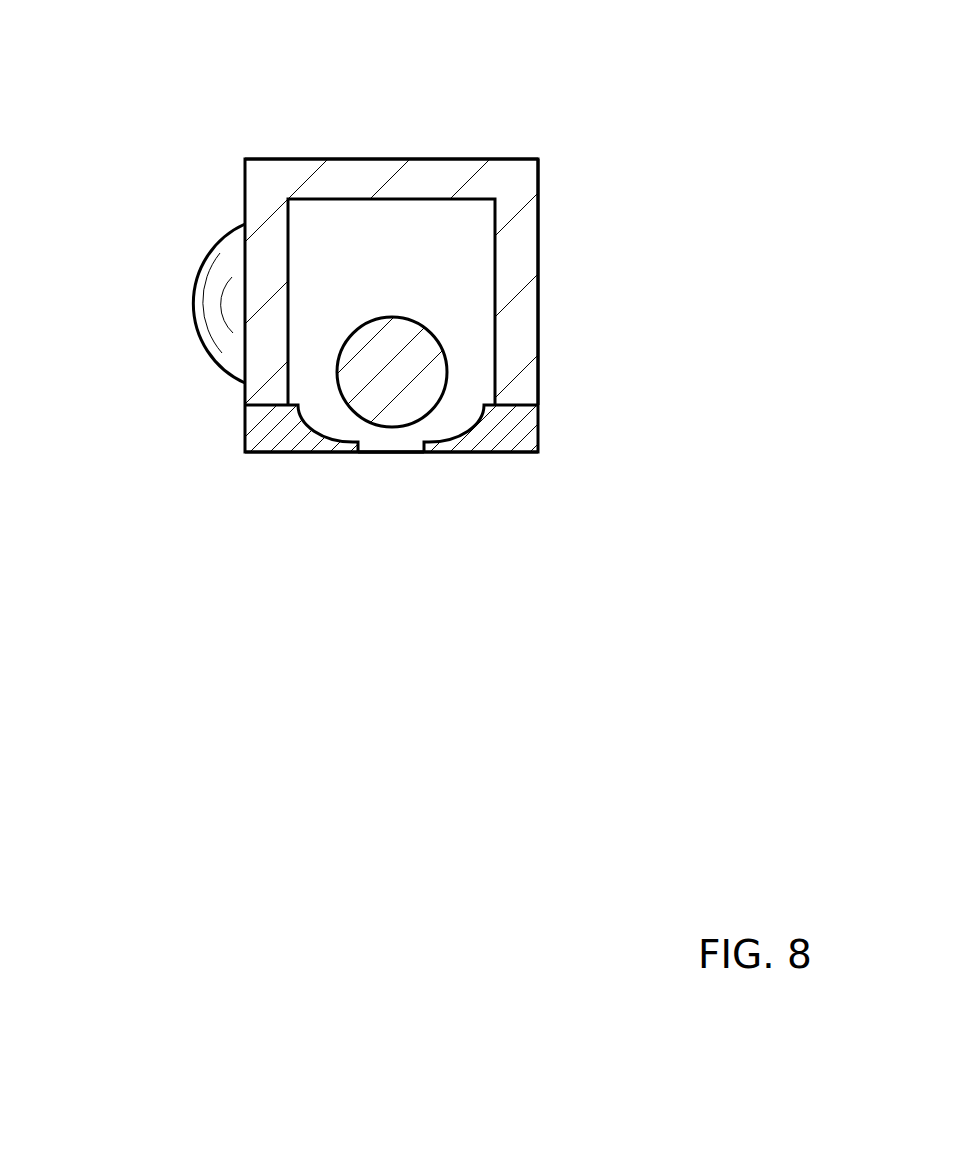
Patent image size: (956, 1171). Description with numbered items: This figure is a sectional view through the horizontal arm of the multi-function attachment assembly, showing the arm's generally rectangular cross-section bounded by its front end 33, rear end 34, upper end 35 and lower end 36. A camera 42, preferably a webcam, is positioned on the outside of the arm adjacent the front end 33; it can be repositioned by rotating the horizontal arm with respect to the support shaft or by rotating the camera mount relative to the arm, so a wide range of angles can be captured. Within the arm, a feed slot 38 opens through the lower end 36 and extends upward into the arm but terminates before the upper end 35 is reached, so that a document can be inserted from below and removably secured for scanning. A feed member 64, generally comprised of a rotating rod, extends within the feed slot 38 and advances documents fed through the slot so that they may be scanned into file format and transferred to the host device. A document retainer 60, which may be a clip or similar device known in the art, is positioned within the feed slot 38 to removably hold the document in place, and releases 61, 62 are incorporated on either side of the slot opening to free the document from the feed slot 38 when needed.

The front end 33 is at (245, 190).
The upper end 35 is at (393, 158).
The rear end 34 is at (538, 249).
The camera 42 is at (198, 278).
The feed member 64 is at (430, 332).
The document retainer 60 is at (261, 466).
The release 61 is at (255, 428).
The release 62 is at (525, 428).
The feed slot 38 is at (397, 443).
The lower end 36 is at (408, 452).